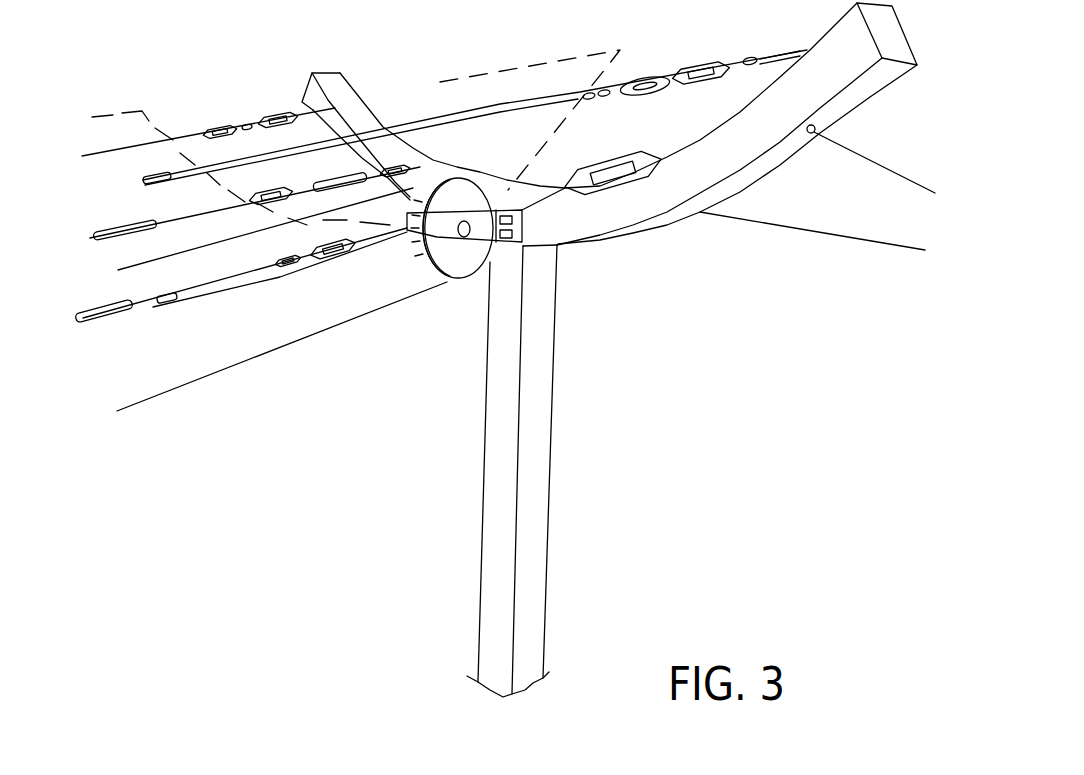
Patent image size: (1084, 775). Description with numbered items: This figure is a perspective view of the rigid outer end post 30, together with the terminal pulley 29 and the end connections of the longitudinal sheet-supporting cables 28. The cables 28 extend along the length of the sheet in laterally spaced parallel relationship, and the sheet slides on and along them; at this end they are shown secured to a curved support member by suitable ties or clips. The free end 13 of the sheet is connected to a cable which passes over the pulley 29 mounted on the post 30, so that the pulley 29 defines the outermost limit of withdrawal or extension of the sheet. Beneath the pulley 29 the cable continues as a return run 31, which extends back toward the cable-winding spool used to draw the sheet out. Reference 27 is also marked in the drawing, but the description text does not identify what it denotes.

The curved boom 13 is at (540, 62).
The string 27 is at (92, 118).
The tensioner sleeve 28 is at (163, 222).
The reel drum 29 is at (463, 267).
The post 30 is at (492, 452).
The guy line 31 is at (200, 399).